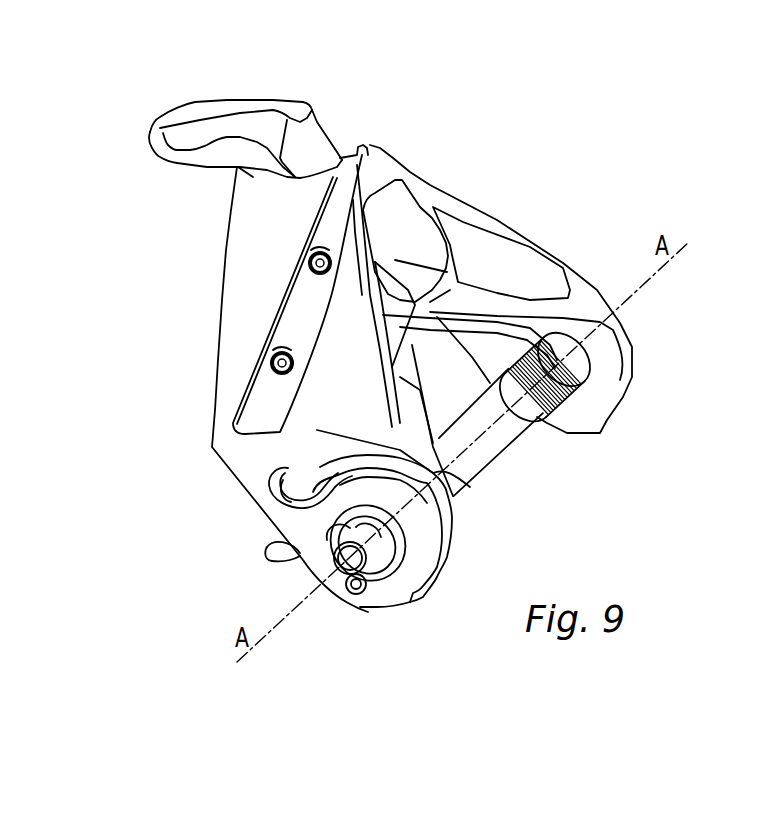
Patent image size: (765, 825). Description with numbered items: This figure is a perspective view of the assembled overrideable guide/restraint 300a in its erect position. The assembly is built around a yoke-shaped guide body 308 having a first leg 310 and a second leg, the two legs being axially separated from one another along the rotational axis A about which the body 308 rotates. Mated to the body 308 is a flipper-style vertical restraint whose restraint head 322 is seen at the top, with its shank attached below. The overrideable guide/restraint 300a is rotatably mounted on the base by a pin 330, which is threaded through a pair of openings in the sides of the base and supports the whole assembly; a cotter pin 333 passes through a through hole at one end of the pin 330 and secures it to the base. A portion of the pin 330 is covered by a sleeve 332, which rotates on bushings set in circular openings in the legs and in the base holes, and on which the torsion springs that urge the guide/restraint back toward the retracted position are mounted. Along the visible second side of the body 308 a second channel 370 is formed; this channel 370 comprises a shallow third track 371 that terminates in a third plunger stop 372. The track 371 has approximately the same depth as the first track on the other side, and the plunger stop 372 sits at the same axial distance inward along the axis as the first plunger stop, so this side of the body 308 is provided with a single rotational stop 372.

The overrideable guide/restraint 300a is at (90, 101).
The guide body 308 is at (242, 250).
The first leg 310 is at (226, 505).
The restraint head 322 is at (255, 100).
The pin 330 is at (347, 551).
The sleeve 332 is at (515, 440).
The cotter pin 333 is at (368, 600).
The channel 370 is at (307, 468).
The shallow third track 371 is at (440, 475).
The third plunger stop 372 is at (283, 480).